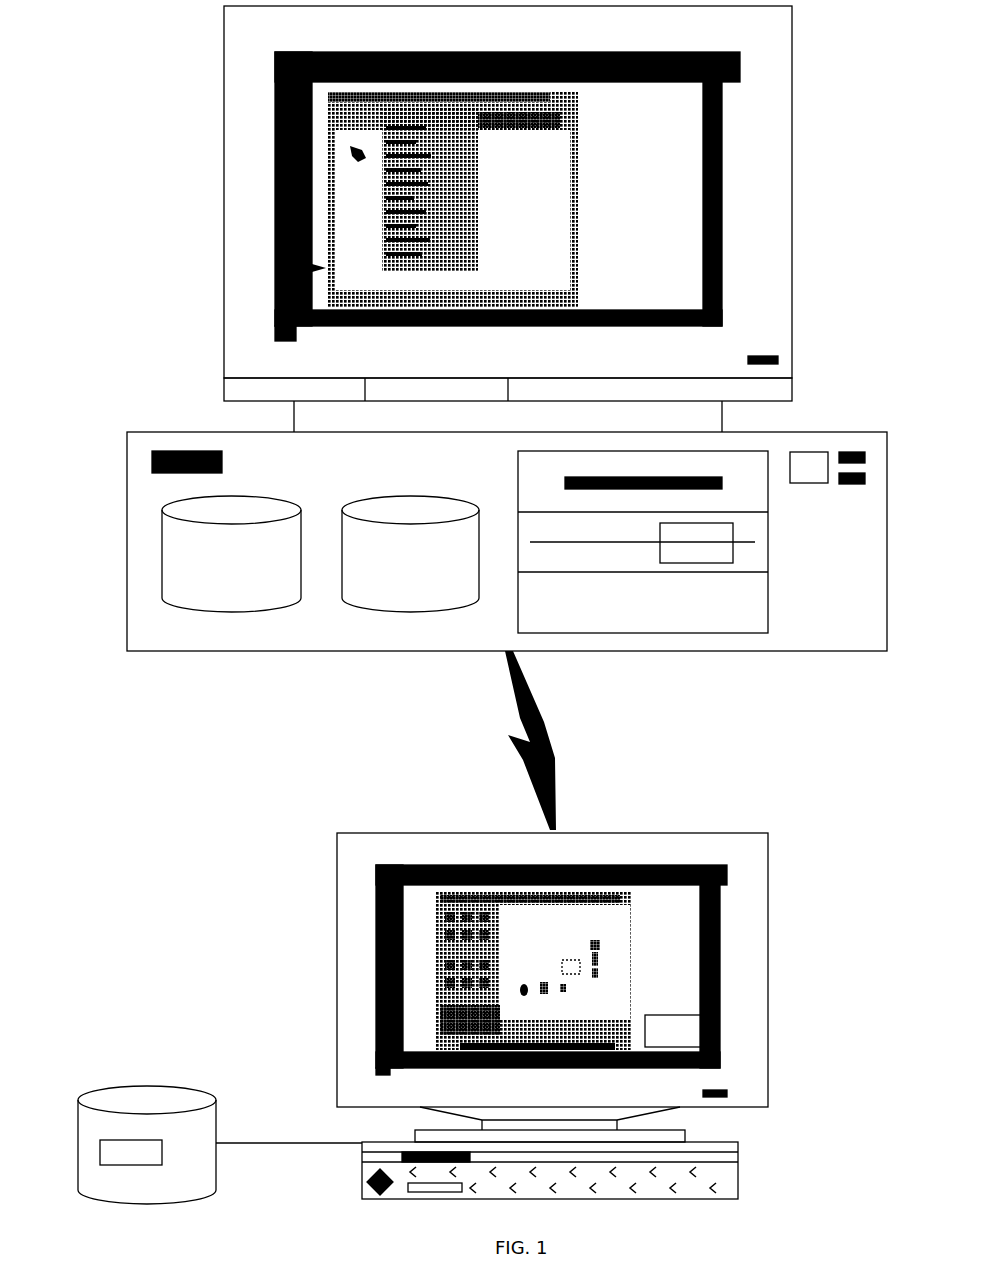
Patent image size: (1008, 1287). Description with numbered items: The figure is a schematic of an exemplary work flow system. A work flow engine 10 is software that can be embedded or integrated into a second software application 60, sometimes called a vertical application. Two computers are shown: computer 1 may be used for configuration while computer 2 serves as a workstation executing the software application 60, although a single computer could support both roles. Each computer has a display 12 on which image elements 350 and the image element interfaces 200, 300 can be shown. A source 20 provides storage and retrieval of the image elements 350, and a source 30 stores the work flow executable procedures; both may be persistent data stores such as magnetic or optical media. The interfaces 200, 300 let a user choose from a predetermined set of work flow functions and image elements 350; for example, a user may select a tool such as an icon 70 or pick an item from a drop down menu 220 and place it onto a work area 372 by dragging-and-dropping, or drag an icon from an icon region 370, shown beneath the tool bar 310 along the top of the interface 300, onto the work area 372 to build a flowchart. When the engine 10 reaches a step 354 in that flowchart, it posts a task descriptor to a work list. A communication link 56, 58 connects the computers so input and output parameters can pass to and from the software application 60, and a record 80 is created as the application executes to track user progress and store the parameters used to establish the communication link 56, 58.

The computer 1 is at (483, 574).
The computer 2 is at (460, 996).
The work flow engine 10 is at (718, 985).
The display 12 is at (228, 214).
The source of image elements 20 is at (201, 585).
The source of work flow executable procedures 30 is at (399, 597).
The communication link 56 is at (582, 740).
The communication link 58 is at (537, 720).
The second software application 60 is at (496, 935).
The icon 70 is at (350, 152).
The record 80 is at (112, 1140).
The image element interface 200 is at (275, 279).
The drop down menu 220 is at (460, 163).
The image element interface 300 is at (459, 935).
The toolbar 310 is at (448, 905).
The image elements 350 is at (460, 992).
The step in the flowchart 354 is at (628, 904).
The icon region 370 is at (458, 1017).
The work area 372 is at (612, 940).